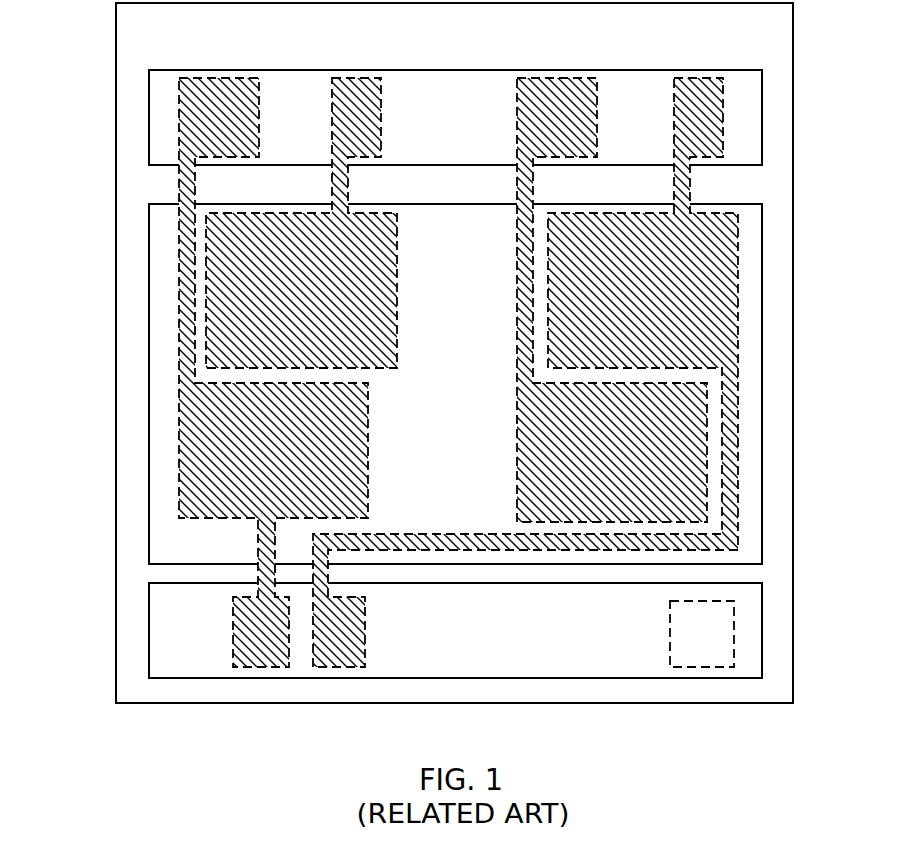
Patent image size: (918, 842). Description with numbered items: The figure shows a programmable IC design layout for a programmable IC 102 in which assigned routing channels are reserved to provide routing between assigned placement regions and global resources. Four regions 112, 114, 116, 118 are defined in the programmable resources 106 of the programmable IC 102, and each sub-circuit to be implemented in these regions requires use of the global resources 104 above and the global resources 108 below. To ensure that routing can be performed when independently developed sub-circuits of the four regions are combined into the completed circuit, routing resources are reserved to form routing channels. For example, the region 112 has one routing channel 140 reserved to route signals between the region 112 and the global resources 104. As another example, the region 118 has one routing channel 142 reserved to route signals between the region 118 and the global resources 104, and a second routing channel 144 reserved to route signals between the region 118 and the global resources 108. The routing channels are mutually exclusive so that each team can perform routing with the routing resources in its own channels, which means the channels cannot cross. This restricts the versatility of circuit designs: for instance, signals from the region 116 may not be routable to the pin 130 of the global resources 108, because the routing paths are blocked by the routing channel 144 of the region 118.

The programmable IC 102 is at (454, 353).
The global resources 104 is at (149, 70).
The programmable resources 106 is at (149, 204).
The global resources 108 is at (149, 583).
The region 112 is at (397, 236).
The region 114 is at (368, 452).
The region 116 is at (517, 396).
The region 118 is at (738, 252).
The pin 130 is at (702, 634).
The routing channel 140 is at (348, 178).
The routing channel 142 is at (690, 178).
The routing channel 144 is at (462, 534).